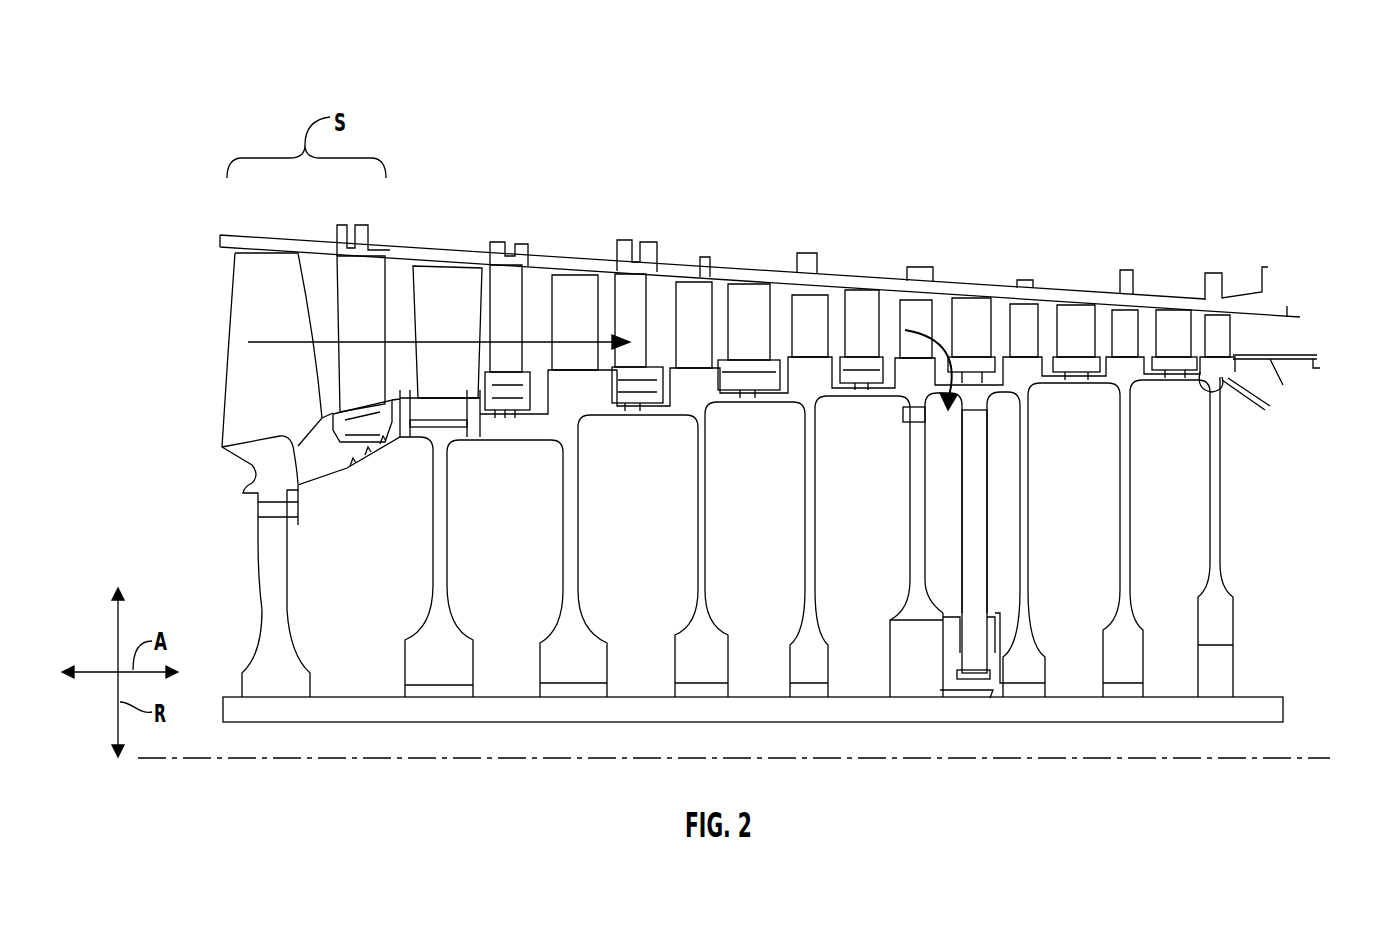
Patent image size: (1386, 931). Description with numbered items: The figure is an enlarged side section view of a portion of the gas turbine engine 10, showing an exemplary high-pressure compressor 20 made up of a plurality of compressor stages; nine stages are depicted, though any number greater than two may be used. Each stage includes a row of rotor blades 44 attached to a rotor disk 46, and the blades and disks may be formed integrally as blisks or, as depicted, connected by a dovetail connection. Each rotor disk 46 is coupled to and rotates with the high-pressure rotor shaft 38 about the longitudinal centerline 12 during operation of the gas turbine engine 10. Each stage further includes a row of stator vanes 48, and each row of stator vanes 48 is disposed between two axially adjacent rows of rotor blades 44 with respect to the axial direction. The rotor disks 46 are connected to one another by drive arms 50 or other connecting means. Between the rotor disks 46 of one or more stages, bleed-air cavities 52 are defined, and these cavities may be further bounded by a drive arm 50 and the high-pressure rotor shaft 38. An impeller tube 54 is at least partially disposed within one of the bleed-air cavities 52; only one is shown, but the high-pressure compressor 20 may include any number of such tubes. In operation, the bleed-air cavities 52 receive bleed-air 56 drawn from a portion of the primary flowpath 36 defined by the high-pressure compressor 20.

The gas turbine engine 10 is at (1013, 80).
The high-pressure compressor 20 is at (1060, 122).
The longitudinal centerline 12 is at (263, 766).
The primary flowpath 36 is at (397, 340).
The high-pressure rotor shaft 38 is at (474, 722).
The rotor blades 44 is at (258, 265).
The rotor disk 46 is at (289, 583).
The stator vanes 48 is at (352, 270).
The drive arms 50 is at (327, 488).
The bleed-air cavities 52 is at (394, 552).
The impeller tube 54 is at (973, 448).
The bleed-air 56 is at (940, 338).